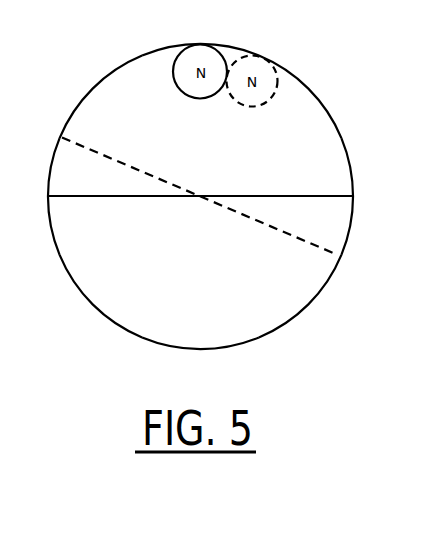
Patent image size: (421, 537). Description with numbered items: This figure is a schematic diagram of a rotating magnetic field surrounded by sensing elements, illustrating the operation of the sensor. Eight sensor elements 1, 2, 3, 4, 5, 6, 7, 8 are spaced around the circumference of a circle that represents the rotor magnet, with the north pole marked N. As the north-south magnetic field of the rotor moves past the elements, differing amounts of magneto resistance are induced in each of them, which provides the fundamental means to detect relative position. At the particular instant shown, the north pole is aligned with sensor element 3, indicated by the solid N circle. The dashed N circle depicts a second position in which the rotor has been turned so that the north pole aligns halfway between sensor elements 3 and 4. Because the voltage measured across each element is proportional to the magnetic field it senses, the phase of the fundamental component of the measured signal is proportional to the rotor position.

The sensor element 1 is at (44, 196).
The sensor element 2 is at (101, 97).
The sensor element 3 is at (200, 35).
The sensor element 4 is at (300, 97).
The sensor element 5 is at (356, 196).
The sensor element 6 is at (300, 296).
The sensor element 7 is at (200, 358).
The sensor element 8 is at (101, 296).